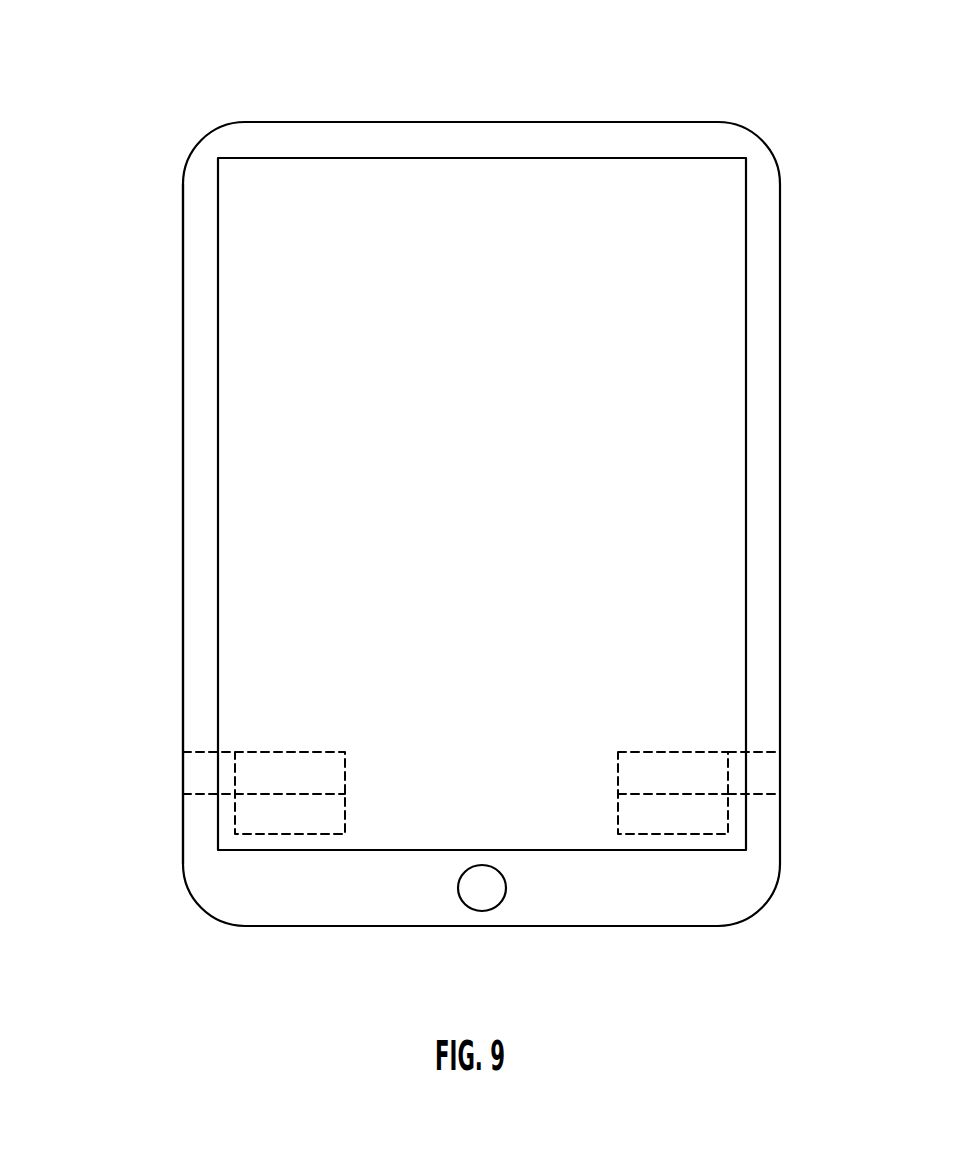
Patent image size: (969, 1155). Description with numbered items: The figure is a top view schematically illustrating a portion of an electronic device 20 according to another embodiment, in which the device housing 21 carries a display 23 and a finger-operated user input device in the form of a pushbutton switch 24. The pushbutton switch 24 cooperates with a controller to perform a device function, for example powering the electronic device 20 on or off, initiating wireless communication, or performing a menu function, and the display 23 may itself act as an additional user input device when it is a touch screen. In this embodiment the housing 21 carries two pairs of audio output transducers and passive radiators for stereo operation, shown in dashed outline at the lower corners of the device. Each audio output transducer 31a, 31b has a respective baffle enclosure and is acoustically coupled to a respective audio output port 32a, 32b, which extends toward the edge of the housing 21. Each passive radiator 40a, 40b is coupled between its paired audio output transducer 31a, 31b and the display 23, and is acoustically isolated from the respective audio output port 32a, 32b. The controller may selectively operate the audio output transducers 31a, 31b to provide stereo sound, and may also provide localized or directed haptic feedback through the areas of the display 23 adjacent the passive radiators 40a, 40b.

The electronic device 20 is at (226, 70).
The housing 21 is at (182, 528).
The display 23 is at (262, 425).
The pushbutton switch 24 is at (488, 895).
The audio output transducer 31a is at (280, 767).
The audio output transducer 31b is at (683, 763).
The audio output port 32a is at (195, 781).
The audio output port 32b is at (762, 779).
The passive radiator 40a is at (263, 818).
The passive radiator 40b is at (690, 819).